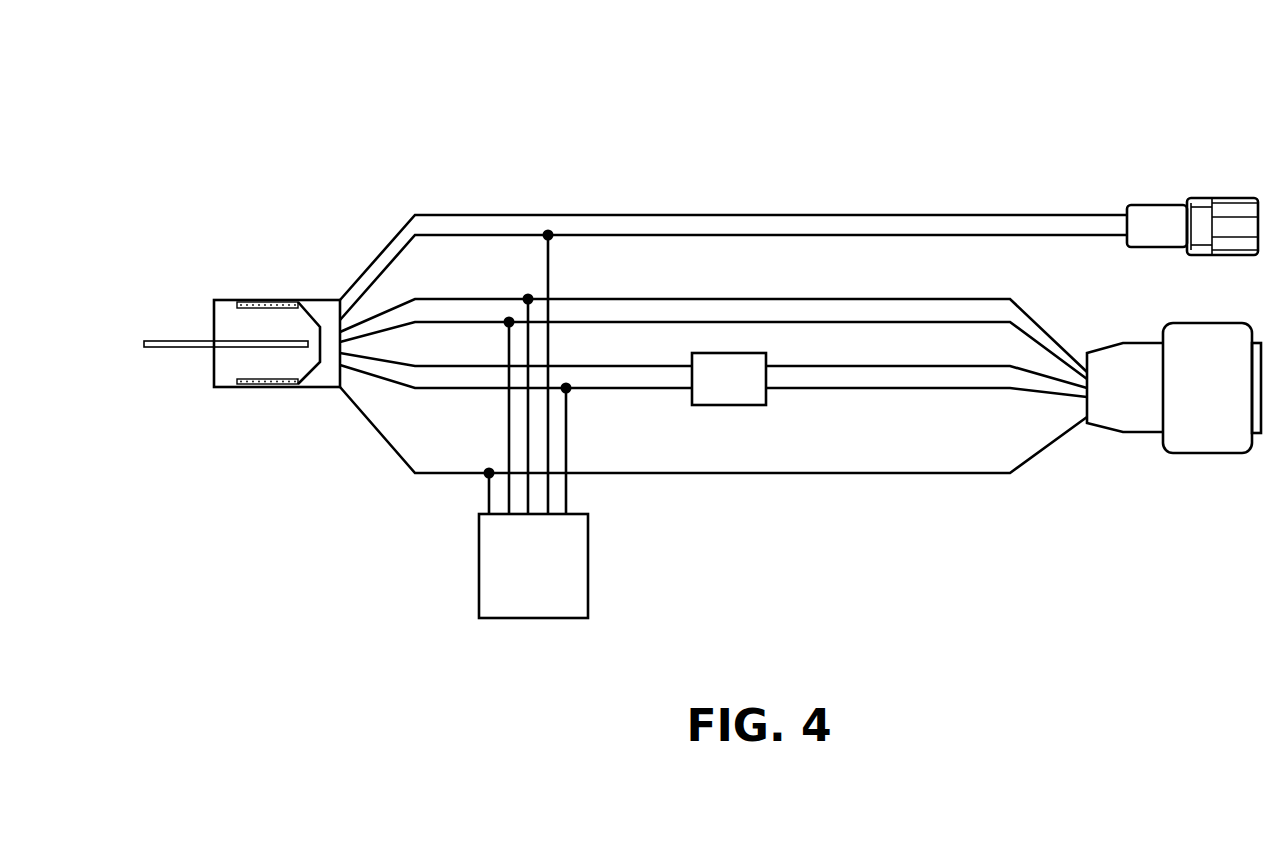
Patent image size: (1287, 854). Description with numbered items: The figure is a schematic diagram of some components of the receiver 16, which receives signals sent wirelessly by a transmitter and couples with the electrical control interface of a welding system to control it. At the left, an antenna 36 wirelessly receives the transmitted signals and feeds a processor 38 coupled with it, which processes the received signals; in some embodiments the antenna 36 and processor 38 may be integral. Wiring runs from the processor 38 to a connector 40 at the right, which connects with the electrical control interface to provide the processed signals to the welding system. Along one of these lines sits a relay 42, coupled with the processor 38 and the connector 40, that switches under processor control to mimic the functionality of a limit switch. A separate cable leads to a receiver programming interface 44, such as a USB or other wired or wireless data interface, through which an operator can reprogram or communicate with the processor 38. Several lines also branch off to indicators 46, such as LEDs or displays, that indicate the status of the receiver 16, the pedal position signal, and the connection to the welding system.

The receiver 16 is at (760, 100).
The antenna 36 is at (162, 338).
The processor 38 is at (258, 327).
The connector 40 is at (1215, 432).
The relay 42 is at (748, 405).
The receiver programming interface 44 is at (1227, 225).
The indicators 46 is at (557, 618).